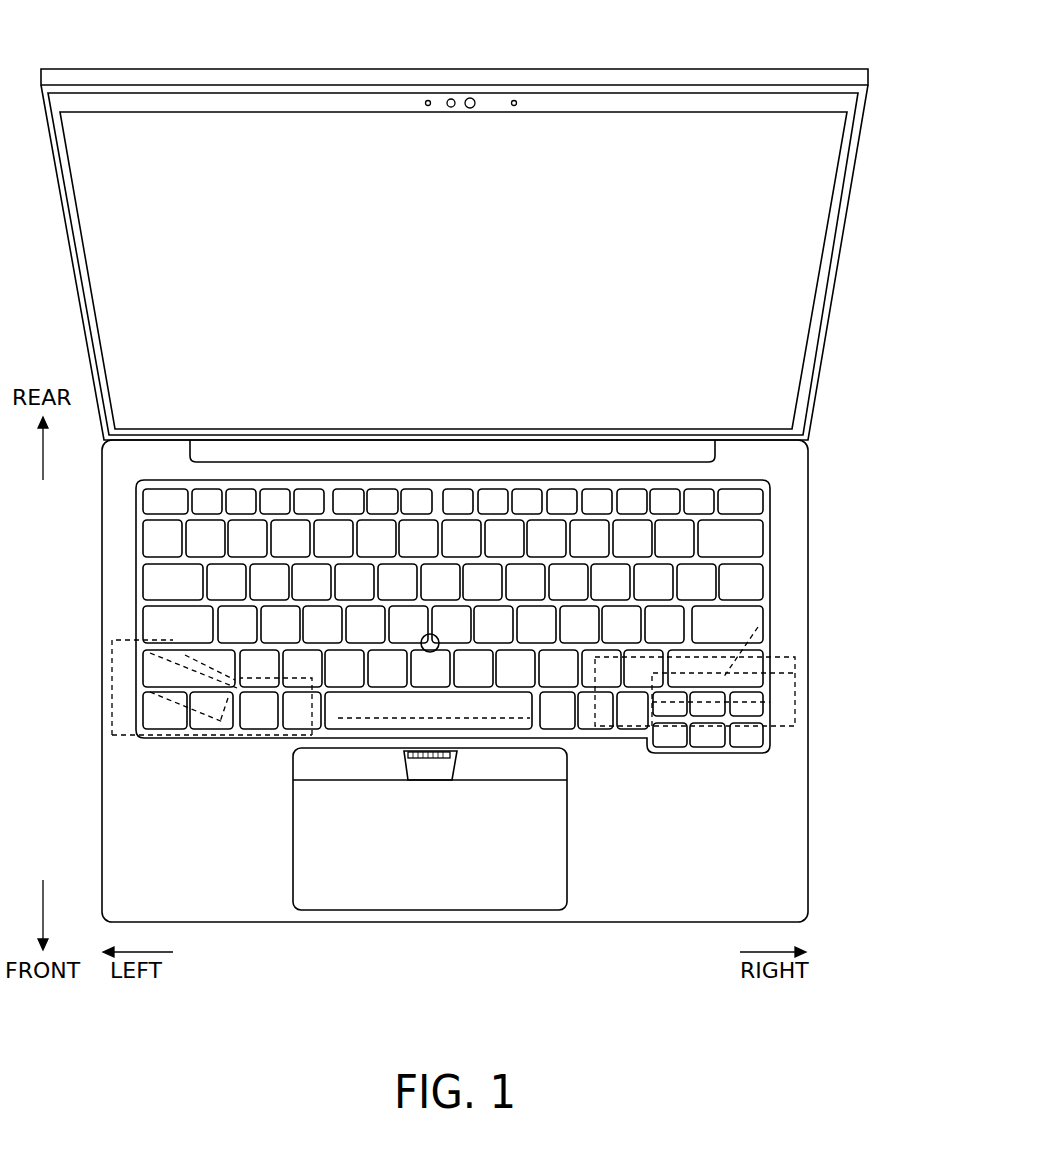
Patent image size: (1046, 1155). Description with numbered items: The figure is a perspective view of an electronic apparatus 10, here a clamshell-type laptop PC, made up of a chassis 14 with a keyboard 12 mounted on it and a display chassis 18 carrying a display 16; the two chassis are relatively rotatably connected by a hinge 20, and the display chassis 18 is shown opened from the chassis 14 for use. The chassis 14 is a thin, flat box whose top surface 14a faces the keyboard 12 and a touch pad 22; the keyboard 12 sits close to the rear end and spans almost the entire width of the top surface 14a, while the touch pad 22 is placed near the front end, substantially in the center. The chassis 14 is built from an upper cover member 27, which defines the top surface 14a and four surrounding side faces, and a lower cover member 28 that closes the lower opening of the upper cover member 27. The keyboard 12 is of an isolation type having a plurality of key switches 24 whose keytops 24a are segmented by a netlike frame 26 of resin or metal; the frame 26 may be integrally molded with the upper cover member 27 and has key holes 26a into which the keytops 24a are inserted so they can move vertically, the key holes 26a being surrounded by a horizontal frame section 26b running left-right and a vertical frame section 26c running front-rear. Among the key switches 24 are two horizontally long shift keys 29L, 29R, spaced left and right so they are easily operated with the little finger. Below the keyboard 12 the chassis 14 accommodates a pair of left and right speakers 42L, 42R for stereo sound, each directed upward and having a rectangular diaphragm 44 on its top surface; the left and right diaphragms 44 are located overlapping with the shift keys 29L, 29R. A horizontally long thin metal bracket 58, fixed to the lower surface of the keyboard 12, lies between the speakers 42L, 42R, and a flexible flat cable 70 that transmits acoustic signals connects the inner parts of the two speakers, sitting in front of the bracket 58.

The electronic apparatus 10 is at (70, 21).
The keyboard 12 is at (137, 597).
The chassis 14 is at (872, 780).
The top surface 14a is at (140, 843).
The display 16 is at (783, 257).
The display chassis 18 is at (850, 216).
The hinge 20 is at (652, 458).
The touch pad 22 is at (458, 883).
The key switches 24 is at (458, 515).
The keytop 24a is at (398, 583).
The frame 26 is at (258, 737).
The key holes 26a is at (548, 525).
The horizontal frame section 26b is at (202, 645).
The vertical frame section 26c is at (223, 535).
The upper cover member 27 is at (765, 797).
The lower cover member 28 is at (765, 840).
The left shift key 29L is at (172, 667).
The right shift key 29R is at (743, 667).
The left speaker 42L is at (125, 714).
The right speaker 42R is at (783, 718).
The diaphragm 44 is at (203, 735).
The bracket 58 is at (338, 737).
The flat cable 70 is at (380, 737).